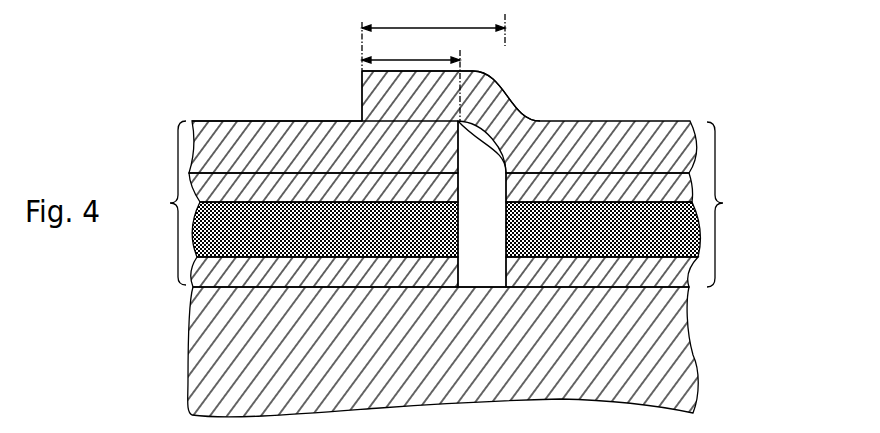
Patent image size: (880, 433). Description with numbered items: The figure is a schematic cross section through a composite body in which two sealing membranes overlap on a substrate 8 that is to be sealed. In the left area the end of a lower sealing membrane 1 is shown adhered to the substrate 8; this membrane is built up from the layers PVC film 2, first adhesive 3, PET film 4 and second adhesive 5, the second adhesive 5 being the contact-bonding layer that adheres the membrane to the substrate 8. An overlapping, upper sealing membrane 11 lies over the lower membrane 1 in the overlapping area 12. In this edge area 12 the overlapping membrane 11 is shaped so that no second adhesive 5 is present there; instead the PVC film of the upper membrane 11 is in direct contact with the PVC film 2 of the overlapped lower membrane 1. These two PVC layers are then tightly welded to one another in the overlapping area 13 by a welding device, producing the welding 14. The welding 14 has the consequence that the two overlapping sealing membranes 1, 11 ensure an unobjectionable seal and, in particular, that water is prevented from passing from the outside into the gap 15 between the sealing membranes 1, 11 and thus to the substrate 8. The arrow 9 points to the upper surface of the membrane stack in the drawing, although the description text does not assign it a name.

The sealing membrane 1 is at (169, 203).
The PVC film (F1) 2 is at (205, 121).
The first adhesive (K1) 3 is at (210, 192).
The PET film (F2) 4 is at (190, 247).
The second adhesive (K2) 5 is at (192, 287).
The substrate (S1) 8 is at (672, 349).
The top surface of layer stack 9 is at (213, 100).
The overlapping sealing membrane 11 is at (749, 204).
The overlapping area 12 is at (433, 35).
The overlapping area of welding 13 is at (411, 75).
The welding 14 is at (362, 119).
The gap 15 is at (482, 204).